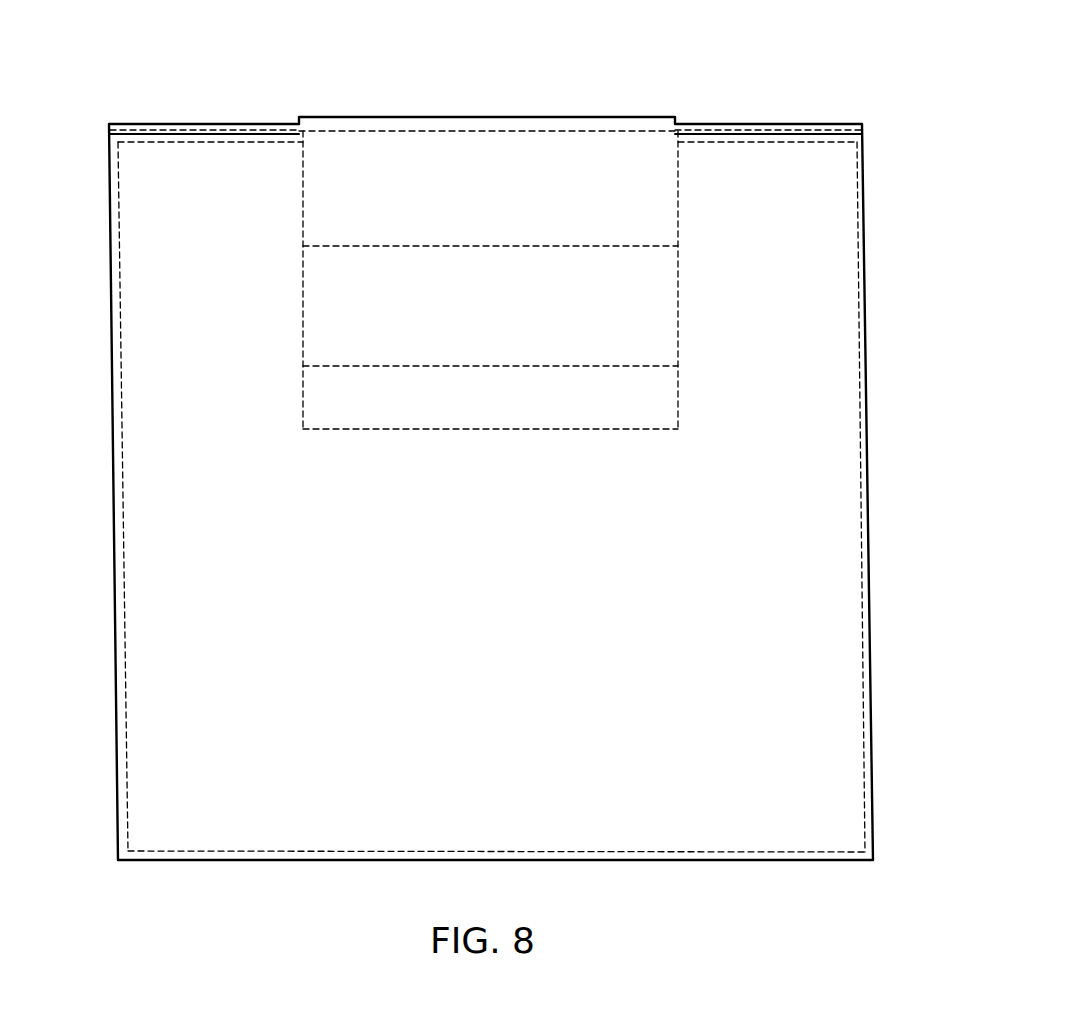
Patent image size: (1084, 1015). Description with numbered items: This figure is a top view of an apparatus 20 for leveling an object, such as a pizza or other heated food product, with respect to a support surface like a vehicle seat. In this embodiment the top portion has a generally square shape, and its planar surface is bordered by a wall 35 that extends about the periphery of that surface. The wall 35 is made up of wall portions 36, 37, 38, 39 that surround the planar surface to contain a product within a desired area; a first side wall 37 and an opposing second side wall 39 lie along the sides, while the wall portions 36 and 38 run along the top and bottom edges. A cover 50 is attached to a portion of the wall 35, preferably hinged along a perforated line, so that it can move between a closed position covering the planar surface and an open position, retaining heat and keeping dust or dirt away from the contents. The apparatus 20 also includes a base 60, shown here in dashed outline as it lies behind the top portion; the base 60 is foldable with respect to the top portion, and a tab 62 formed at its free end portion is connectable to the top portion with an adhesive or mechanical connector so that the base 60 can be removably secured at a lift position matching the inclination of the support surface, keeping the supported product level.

The apparatus 20 is at (508, 78).
The wall 35 is at (209, 120).
The wall portion 36 is at (732, 130).
The first side wall 37 is at (863, 392).
The wall portion 38 is at (683, 862).
The second side wall 39 is at (112, 472).
The cover 50 is at (247, 630).
The base 60 is at (660, 223).
The tab 62 is at (673, 410).